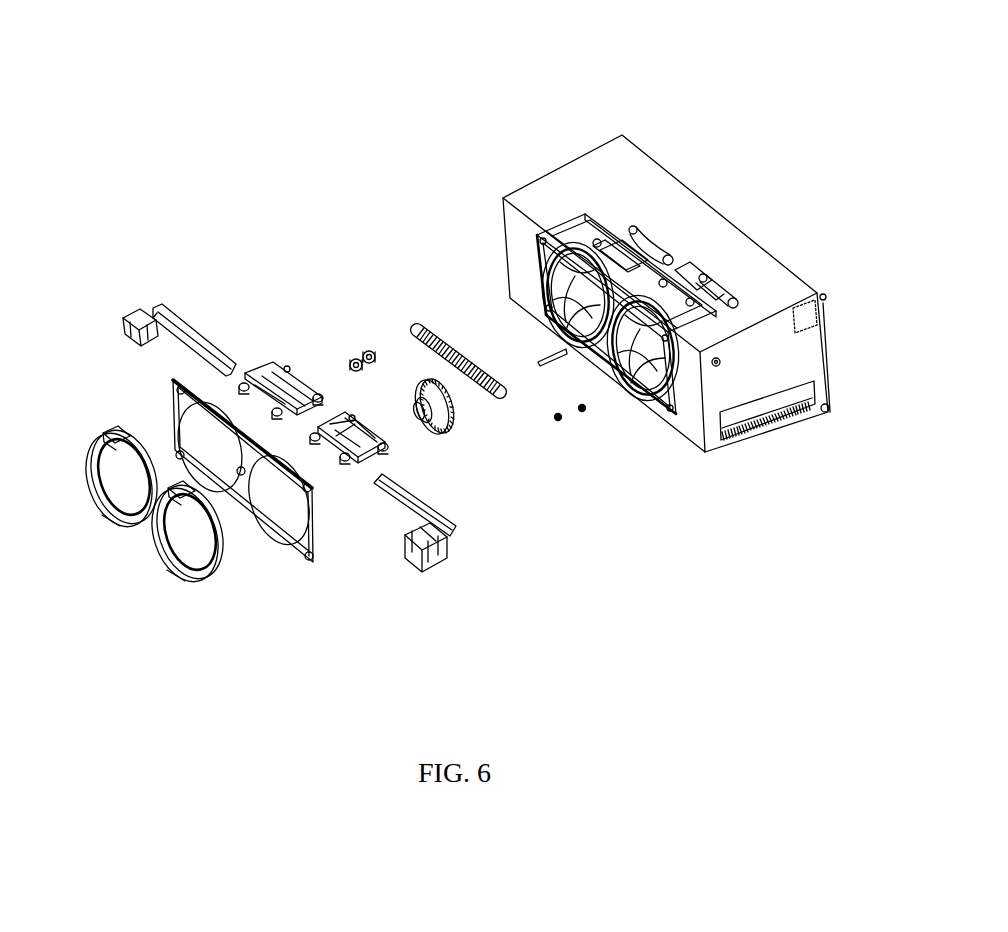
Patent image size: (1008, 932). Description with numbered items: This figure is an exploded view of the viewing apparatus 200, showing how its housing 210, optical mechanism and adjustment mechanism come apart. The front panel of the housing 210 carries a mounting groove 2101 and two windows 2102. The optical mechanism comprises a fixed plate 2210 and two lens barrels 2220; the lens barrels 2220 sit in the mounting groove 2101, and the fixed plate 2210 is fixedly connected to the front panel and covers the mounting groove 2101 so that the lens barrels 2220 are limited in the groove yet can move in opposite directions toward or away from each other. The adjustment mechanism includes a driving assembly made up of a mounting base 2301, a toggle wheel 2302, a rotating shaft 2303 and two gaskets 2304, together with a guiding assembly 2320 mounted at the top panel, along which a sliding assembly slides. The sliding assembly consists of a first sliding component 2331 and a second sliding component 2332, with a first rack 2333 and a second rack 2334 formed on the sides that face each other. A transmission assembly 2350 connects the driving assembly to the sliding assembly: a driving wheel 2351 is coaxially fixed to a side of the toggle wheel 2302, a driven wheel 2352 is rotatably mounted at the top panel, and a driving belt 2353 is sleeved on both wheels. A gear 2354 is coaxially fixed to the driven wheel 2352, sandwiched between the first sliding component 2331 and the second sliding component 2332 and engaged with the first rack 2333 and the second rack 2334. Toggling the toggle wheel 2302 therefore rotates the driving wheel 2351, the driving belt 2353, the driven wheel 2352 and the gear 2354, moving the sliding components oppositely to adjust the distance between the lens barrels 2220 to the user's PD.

The viewing apparatus 200 is at (200, 32).
The housing 210 is at (516, 200).
The mounting groove 2101 is at (590, 358).
The windows 2102 is at (660, 378).
The fixed plate 2210 is at (298, 553).
The lens barrels 2220 is at (102, 493).
The mounting base 2301 is at (735, 300).
The toggle wheel 2302 is at (457, 410).
The rotating shaft 2303 is at (548, 356).
The gaskets 2304 is at (560, 423).
The guiding assembly 2320 is at (583, 214).
The first sliding component 2331 is at (453, 525).
The second sliding component 2332 is at (162, 320).
The first rack 2333 is at (403, 505).
The second rack 2334 is at (205, 340).
The transmission assembly 2350 is at (266, 228).
The driving wheel 2351 is at (436, 422).
The driven wheel 2352 is at (357, 352).
The driving belt 2353 is at (435, 345).
The gear 2354 is at (350, 352).